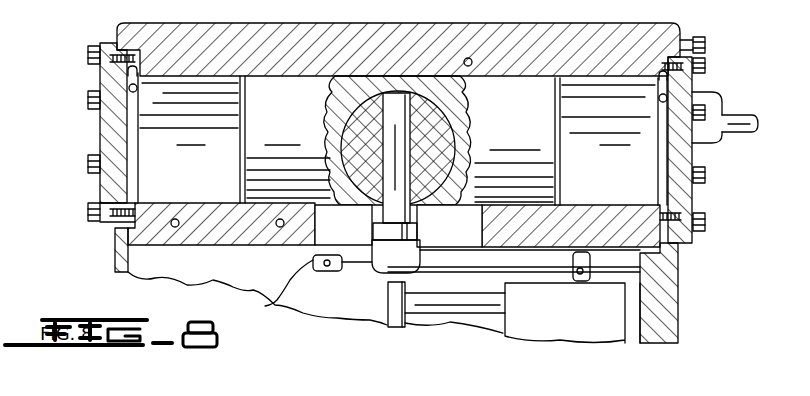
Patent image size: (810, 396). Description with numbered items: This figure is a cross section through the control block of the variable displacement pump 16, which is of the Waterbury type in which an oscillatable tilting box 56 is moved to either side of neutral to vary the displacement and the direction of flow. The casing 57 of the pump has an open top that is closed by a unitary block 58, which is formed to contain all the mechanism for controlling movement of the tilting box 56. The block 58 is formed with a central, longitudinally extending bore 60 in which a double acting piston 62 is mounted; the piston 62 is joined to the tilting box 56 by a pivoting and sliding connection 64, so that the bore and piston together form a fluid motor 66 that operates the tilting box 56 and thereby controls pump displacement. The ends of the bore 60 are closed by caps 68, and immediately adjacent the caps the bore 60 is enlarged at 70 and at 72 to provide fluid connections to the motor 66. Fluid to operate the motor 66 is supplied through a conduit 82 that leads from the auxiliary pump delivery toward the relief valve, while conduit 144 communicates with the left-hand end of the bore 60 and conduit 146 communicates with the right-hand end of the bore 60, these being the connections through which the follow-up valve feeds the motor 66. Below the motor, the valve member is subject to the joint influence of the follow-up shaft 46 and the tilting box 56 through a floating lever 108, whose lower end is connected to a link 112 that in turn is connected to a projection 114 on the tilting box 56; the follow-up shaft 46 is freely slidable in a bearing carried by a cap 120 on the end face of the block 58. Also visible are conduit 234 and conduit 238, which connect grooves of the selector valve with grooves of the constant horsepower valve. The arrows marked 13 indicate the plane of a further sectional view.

The section line 13- 13 is at (640, 193).
The variable displacement pump 16 is at (575, 322).
The follow-up shaft 46 is at (724, 135).
The tilting box 56 is at (350, 302).
The casing 57 is at (118, 255).
The unitary block 58 is at (560, 42).
The bore 60 is at (565, 141).
The double acting piston 62 is at (421, 140).
The pivoting and sliding connection 64 is at (385, 200).
The fluid motor 66 is at (237, 158).
The caps 68 is at (105, 140).
The enlarged portion of bore 70 is at (668, 170).
The enlarged portion of bore 72 is at (140, 66).
The conduit 82 is at (470, 65).
The floating lever 108 is at (591, 268).
The link 112 is at (502, 270).
The projection 114 is at (280, 304).
The cap 120 is at (724, 108).
The conduit 144 is at (129, 88).
The conduit 146 is at (667, 98).
The conduit 234 is at (177, 227).
The conduit 238 is at (282, 227).